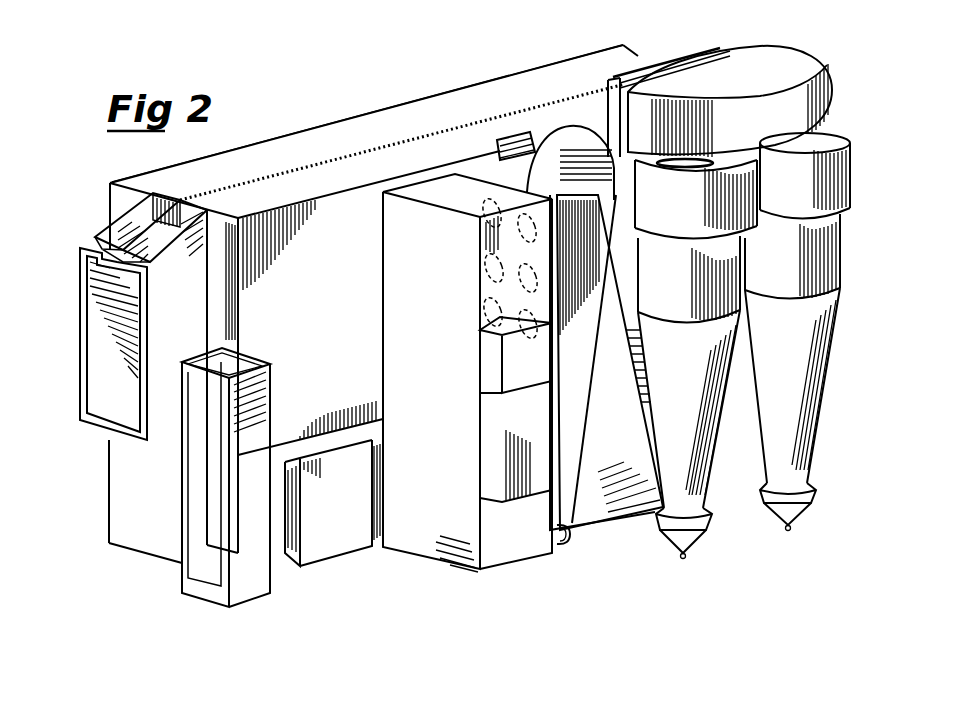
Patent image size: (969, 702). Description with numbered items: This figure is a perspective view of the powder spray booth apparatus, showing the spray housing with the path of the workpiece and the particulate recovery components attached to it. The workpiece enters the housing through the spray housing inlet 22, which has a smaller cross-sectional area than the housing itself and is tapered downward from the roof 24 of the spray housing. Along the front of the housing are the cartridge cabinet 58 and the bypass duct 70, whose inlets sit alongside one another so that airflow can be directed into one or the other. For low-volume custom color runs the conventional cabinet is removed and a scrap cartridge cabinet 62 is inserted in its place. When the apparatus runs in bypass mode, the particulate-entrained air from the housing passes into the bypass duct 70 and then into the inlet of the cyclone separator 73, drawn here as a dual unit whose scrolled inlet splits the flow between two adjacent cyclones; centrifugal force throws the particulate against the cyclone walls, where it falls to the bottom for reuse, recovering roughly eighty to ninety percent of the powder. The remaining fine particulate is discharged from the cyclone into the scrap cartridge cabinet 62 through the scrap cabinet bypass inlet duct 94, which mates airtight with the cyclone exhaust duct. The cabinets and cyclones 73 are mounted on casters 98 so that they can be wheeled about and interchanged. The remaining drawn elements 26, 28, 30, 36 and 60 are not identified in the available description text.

The spray housing inlet 22 is at (97, 235).
The roof 24 is at (402, 144).
The top support beam 26 is at (340, 147).
The mounting frame 28 is at (80, 422).
The header manifold 30 is at (632, 47).
The main housing 36 is at (333, 295).
The cartridge cabinet 58 is at (448, 537).
The enclosure 60 is at (530, 480).
The scrap cartridge cabinet 62 is at (587, 197).
The bypass duct 70 is at (618, 485).
The cyclone separator 73 is at (849, 238).
The scrap cabinet bypass inlet duct 94 is at (540, 153).
The casters 98 is at (563, 543).